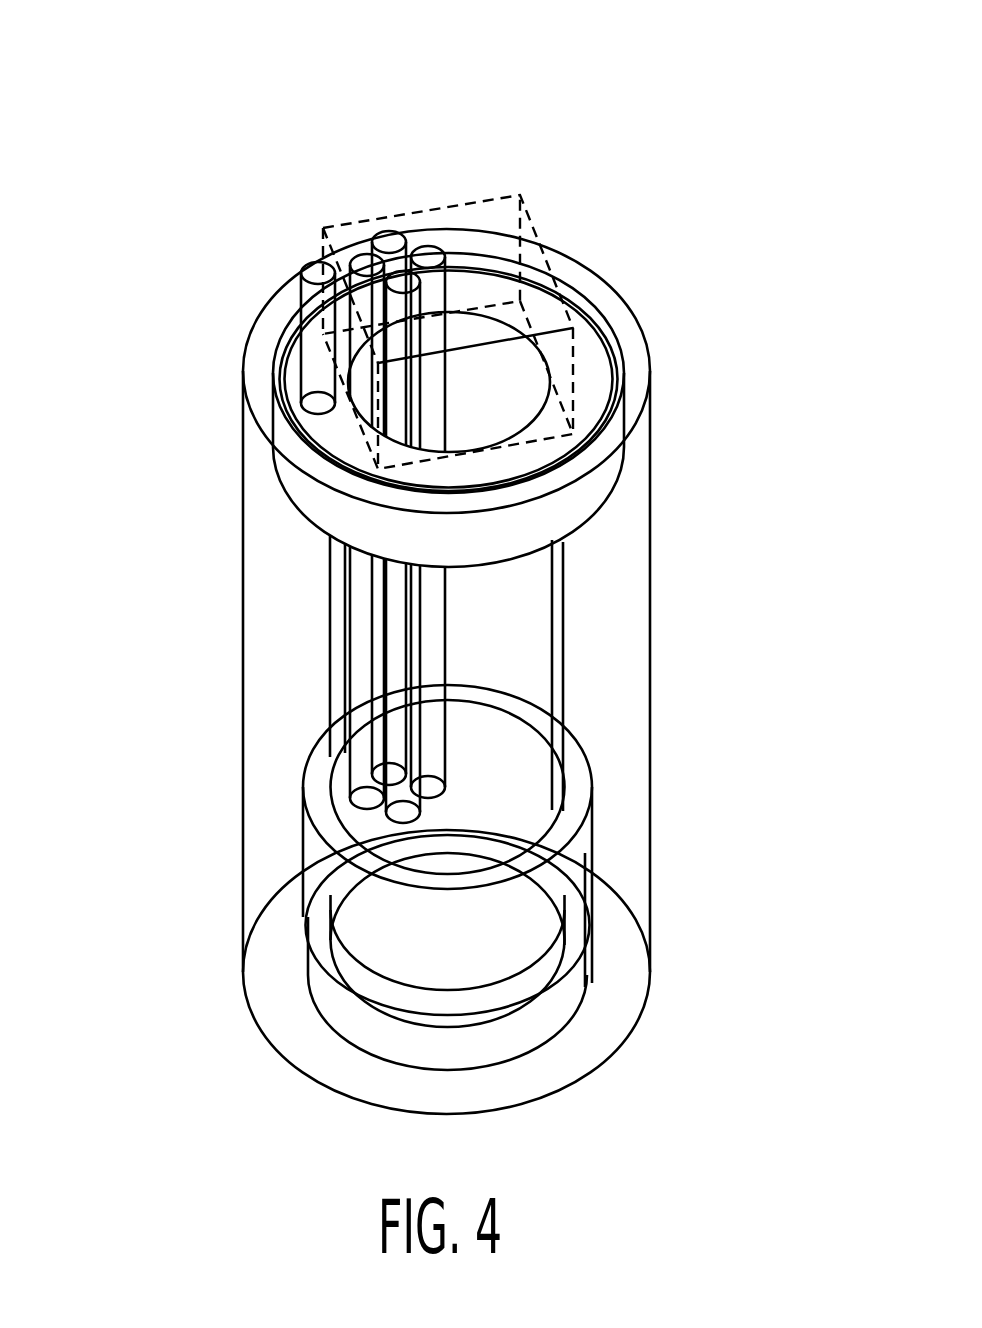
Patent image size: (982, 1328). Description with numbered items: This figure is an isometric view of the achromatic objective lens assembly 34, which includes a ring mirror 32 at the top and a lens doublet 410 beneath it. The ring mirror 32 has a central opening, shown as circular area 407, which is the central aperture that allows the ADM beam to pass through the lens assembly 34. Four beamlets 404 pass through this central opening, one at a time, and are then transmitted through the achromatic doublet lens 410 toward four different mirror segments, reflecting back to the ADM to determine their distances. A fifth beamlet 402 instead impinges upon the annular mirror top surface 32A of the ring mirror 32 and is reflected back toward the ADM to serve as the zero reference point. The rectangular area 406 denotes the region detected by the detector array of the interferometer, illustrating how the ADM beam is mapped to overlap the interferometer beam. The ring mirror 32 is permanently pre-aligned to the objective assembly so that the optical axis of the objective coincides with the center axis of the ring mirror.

The ring mirror 32 is at (308, 495).
The annular mirror top surface 32A is at (594, 353).
The achromatic F/3 doublet lens assembly 34 is at (651, 612).
The fifth beamlet 402 is at (308, 273).
The beamlets 404 is at (390, 242).
The rectangular area 406 is at (530, 213).
The circular area 407 is at (546, 452).
The achromatic F/3 doublet lens 410 is at (320, 876).